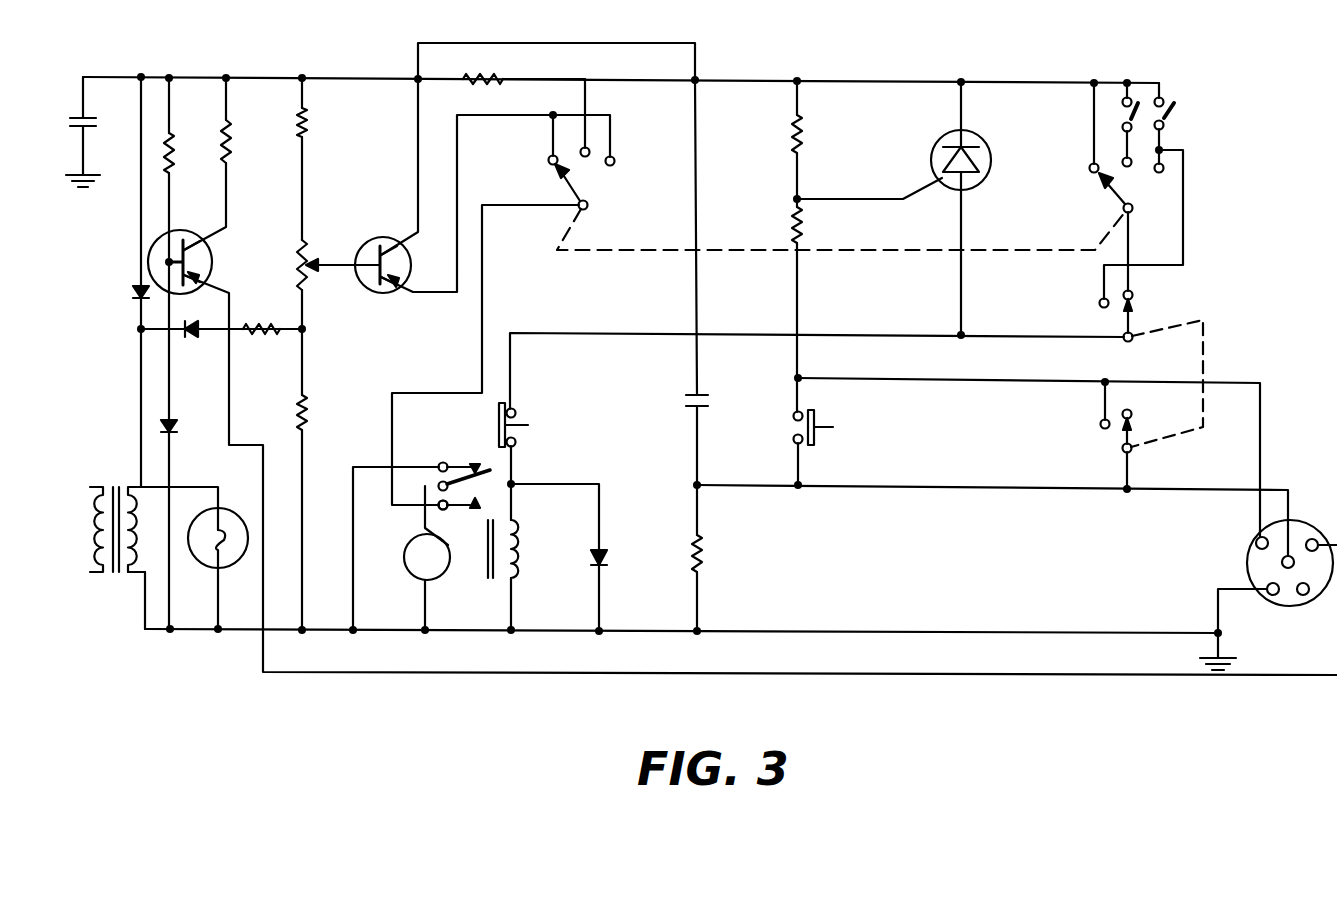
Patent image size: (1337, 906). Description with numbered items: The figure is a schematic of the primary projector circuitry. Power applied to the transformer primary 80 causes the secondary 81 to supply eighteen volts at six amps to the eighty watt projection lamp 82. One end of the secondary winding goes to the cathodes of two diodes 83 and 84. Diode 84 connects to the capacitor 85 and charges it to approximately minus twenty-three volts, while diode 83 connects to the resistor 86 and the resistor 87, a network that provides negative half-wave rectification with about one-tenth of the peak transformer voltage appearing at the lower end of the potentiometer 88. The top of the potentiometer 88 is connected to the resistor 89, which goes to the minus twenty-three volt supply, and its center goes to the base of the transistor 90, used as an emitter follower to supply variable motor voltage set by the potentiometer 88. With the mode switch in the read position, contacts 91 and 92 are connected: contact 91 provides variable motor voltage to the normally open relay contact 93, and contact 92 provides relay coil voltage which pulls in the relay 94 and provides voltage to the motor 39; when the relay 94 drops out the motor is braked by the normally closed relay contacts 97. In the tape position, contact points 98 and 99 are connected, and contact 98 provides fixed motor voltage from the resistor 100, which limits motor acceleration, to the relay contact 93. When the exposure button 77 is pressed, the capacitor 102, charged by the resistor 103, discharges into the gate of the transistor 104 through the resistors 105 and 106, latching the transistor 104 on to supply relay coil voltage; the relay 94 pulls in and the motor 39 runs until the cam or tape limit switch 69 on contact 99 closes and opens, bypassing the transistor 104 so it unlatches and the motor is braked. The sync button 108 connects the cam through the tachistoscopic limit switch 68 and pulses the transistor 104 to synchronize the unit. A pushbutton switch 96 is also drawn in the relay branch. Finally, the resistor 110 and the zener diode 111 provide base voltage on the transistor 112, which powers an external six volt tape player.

The motor 39 is at (412, 556).
The tachistoscopic limit switch 68 is at (1165, 100).
The tape limit switch 69 is at (1123, 103).
The exposure button 77 is at (806, 412).
The transformer primary 80 is at (92, 530).
The secondary 81 is at (132, 575).
The projection lamp 82 is at (212, 566).
The diode 83 is at (196, 338).
The diode 84 is at (130, 293).
The capacitor 85 is at (70, 120).
The resistor 86 is at (268, 337).
The resistor 87 is at (310, 412).
The potentiometer 88 is at (306, 256).
The resistor 89 is at (308, 122).
The transistor 90 is at (412, 262).
The contact 91 is at (533, 120).
The contact 92 is at (1094, 150).
The N.O. relay contact 93 is at (447, 509).
The relay 94 is at (518, 572).
The pushbutton switch 96 is at (516, 410).
The N.C. relay contacts 97 is at (470, 440).
The contact 98 is at (587, 100).
The contact 99 is at (1132, 164).
The resistor 100 is at (468, 72).
The capacitor 102 is at (702, 398).
The resistor 103 is at (706, 549).
The transistor 104 is at (941, 160).
The resistor 105 is at (790, 225).
The resistor 106 is at (790, 138).
The SYNC button 108 is at (1207, 345).
The resistor 110 is at (172, 152).
The zener diode 111 is at (163, 425).
The transistor 112 is at (211, 250).